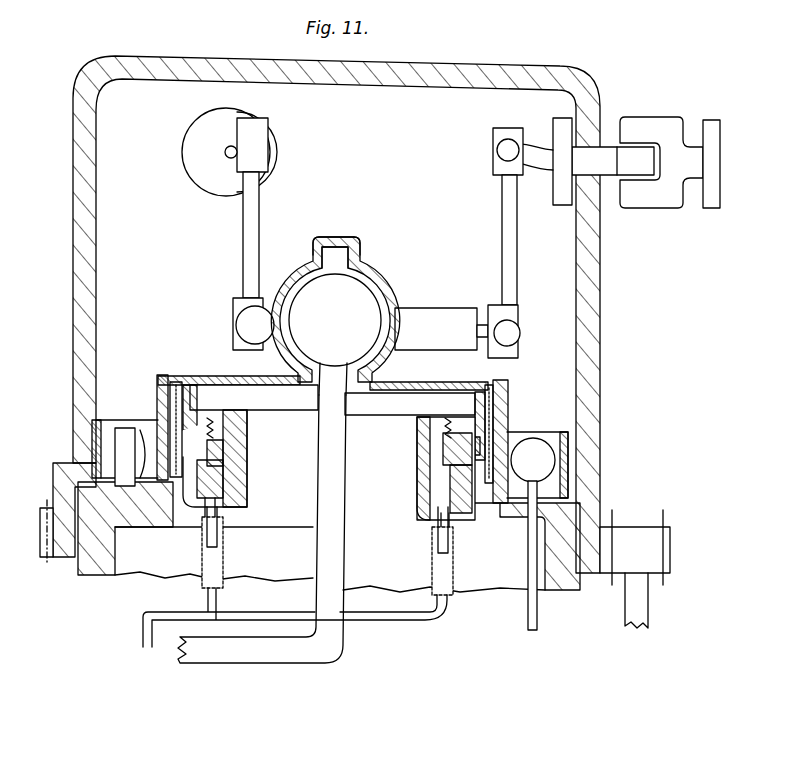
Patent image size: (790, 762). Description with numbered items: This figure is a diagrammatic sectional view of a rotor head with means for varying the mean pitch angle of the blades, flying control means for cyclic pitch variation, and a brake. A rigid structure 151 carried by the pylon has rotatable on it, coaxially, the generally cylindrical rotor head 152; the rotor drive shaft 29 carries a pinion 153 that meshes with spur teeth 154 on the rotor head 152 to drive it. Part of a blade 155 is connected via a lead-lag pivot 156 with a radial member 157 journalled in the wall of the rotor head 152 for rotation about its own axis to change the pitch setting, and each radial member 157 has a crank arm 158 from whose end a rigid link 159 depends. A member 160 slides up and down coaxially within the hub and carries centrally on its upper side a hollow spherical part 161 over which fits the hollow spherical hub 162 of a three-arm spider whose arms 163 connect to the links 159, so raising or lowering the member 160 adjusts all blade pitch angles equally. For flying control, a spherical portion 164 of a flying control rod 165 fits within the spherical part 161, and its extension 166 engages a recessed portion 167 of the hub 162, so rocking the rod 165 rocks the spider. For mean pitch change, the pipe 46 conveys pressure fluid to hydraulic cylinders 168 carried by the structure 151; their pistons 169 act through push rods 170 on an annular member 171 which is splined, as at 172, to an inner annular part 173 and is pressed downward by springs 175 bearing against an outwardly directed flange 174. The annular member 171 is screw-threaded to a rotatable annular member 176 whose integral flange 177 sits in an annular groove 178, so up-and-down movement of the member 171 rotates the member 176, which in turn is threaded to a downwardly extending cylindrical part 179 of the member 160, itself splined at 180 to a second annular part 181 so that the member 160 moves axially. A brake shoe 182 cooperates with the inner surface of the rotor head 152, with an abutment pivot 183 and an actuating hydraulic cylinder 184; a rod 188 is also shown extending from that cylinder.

The rotor drive shaft 29 is at (627, 622).
The pipe 46 is at (143, 636).
The rigid structure 151 is at (152, 565).
The rotor head 152 is at (588, 332).
The pinion 153 is at (632, 535).
The spur teeth 154 is at (47, 565).
The blade 155 is at (708, 205).
The lead-lag pivot 156 is at (645, 150).
The radial member 157 is at (210, 142).
The crank arm 158 is at (238, 151).
The rigid link 159 is at (252, 206).
The member 160 is at (262, 381).
The hollow spherical part 161 is at (380, 300).
The hollow spherical hub 162 is at (300, 270).
The arm 163 is at (236, 324).
The spherical portion 164 is at (328, 315).
The flying control rod 165 is at (260, 653).
The extension 166 is at (343, 262).
The recessed portion 167 is at (330, 237).
The hydraulic cylinder 168 is at (224, 572).
The piston 169 is at (216, 546).
The push rod 170 is at (216, 498).
The annular member 171 is at (205, 472).
The splined relationship 172 is at (216, 456).
The inner annular part 173 is at (246, 442).
The outwardly directed flange 174 is at (332, 400).
The spring 175 is at (226, 430).
The rotatable annular member 176 is at (186, 437).
The integral flange 177 is at (185, 510).
The annular groove 178 is at (165, 525).
The cylindrical part 179 is at (165, 385).
The splined engagement 180 is at (190, 430).
The second annular part 181 is at (162, 396).
The brake shoe 182 is at (138, 465).
The abutment pivot 183 is at (122, 460).
The hydraulic cylinder 184 is at (540, 462).
The rod 188 is at (528, 628).